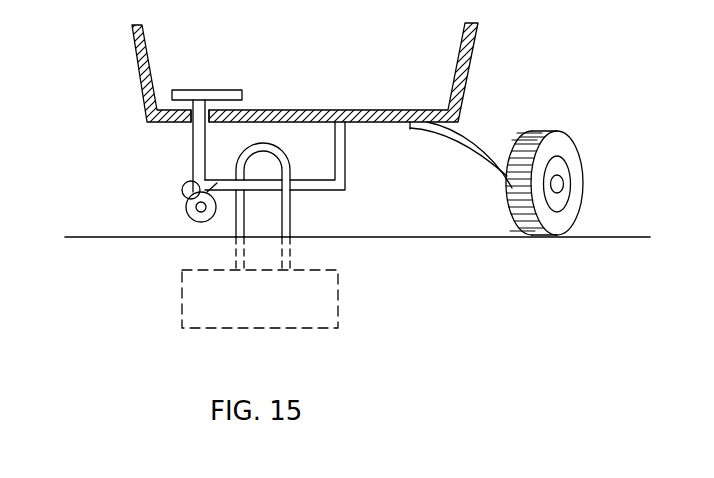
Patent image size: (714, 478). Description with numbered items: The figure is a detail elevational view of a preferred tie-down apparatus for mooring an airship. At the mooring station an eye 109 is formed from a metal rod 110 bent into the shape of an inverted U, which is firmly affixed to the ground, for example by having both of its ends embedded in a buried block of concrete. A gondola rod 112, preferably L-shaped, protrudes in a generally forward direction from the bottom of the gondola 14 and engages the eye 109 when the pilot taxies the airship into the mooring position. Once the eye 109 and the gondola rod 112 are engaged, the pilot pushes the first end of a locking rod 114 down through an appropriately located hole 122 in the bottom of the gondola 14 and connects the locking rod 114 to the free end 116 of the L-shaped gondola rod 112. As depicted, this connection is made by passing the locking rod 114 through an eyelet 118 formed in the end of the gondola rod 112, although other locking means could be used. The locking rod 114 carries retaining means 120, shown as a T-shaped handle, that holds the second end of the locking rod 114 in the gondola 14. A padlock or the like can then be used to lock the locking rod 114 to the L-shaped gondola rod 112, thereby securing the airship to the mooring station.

The gondola 14 is at (477, 33).
The eye 109 is at (193, 221).
The metal rod 110 is at (291, 205).
The gondola rod 112 is at (342, 170).
The locking rod 114 is at (193, 148).
The free end 116 is at (327, 283).
The eyelet 118 is at (183, 193).
The retaining means 120 is at (208, 90).
The hole 122 is at (190, 127).